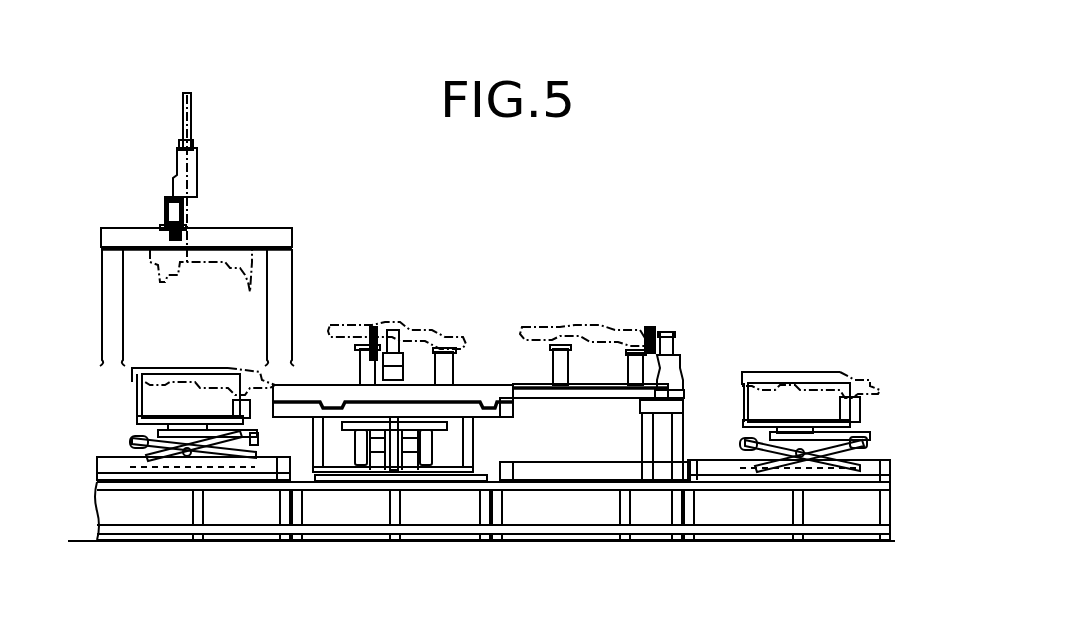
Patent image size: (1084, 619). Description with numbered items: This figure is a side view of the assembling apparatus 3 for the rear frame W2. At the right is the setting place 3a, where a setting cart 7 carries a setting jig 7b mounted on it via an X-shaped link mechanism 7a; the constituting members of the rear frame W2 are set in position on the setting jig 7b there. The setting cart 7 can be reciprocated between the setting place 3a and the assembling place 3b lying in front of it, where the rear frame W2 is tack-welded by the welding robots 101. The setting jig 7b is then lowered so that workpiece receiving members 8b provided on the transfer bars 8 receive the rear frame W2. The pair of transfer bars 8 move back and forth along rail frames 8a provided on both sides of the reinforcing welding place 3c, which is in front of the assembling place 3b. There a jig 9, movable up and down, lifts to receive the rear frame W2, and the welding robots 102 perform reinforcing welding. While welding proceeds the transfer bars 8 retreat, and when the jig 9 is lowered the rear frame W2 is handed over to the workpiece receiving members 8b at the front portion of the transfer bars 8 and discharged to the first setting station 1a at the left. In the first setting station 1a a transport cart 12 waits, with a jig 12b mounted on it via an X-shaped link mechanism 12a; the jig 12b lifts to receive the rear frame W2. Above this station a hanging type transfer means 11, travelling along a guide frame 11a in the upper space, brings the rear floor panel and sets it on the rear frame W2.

The assembling apparatus 3 is at (594, 203).
The first setting station 1a is at (208, 337).
The setting place 3a is at (813, 273).
The assembling place 3b is at (603, 275).
The reinforcing welding place 3c is at (407, 285).
The setting cart 7 is at (862, 477).
The X-shaped link mechanism 7a is at (738, 455).
The setting jig 7b is at (745, 422).
The transfer bar 8 is at (558, 392).
The rail frame 8a is at (483, 410).
The workpiece receiving member 8b is at (370, 362).
The jig 9 is at (347, 431).
The welding robot 101 is at (680, 339).
The welding robot 102 is at (410, 344).
The transfer means 11 is at (199, 181).
The guide frame 11a is at (165, 217).
The transport cart 12 is at (168, 470).
The X-shaped link mechanism 12a is at (128, 450).
The jig 12b is at (137, 423).
The rear frame W2 is at (818, 353).